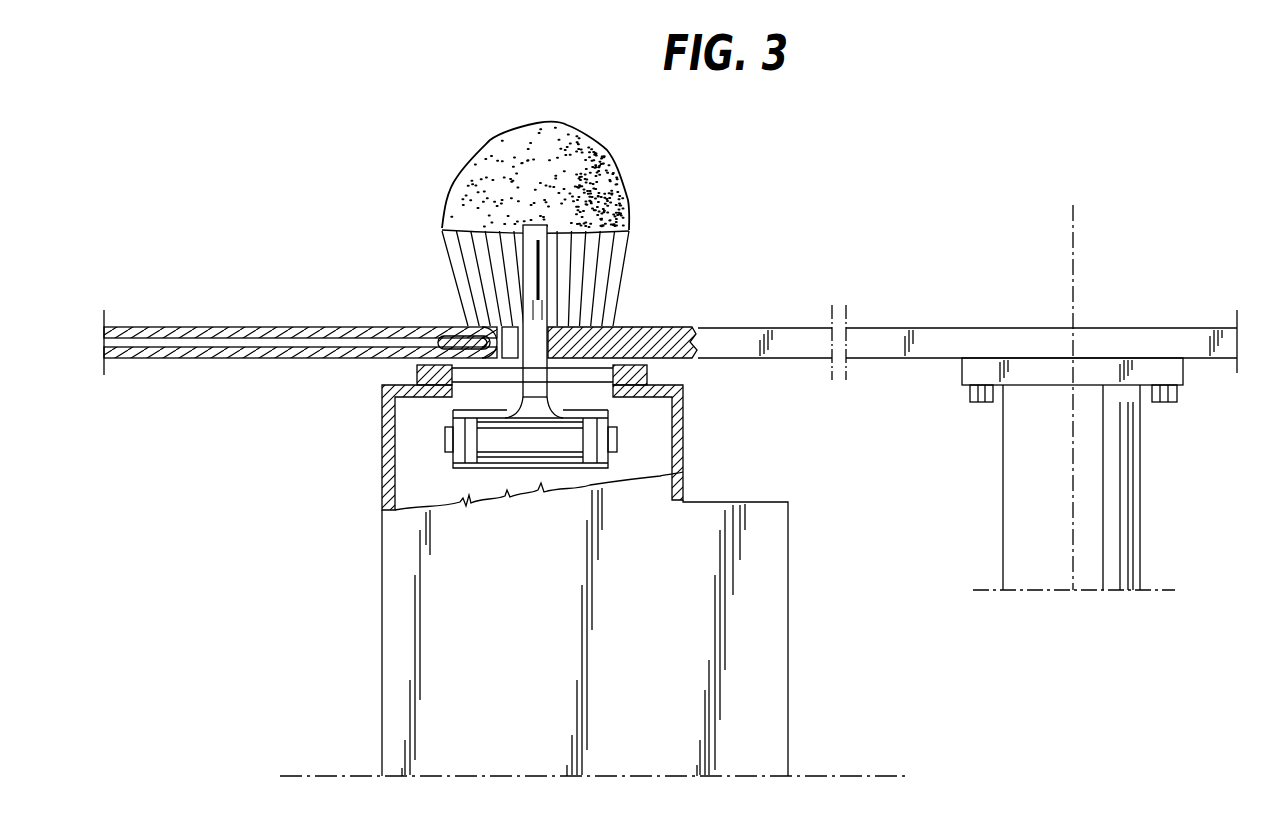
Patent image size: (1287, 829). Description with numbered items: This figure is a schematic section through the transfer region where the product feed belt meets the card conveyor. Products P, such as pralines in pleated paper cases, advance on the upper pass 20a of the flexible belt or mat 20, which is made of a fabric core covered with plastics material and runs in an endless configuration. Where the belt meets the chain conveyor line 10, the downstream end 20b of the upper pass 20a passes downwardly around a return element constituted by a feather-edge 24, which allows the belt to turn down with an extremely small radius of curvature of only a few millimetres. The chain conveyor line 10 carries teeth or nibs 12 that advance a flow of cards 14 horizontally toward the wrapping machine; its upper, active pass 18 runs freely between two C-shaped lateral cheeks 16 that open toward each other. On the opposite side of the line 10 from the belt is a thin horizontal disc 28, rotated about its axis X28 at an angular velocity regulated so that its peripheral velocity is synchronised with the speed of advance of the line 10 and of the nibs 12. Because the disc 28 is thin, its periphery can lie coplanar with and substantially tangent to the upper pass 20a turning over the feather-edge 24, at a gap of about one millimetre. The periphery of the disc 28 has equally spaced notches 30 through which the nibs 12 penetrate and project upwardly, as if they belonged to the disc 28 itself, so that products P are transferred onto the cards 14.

The products P is at (563, 178).
The chain conveyor line 10 is at (537, 508).
The teeth or nibs 12 is at (548, 262).
The cards 14 is at (613, 327).
The C-shaped lateral cheeks 16 is at (413, 367).
The upper active pass 18 is at (468, 472).
The belt or mat 20 is at (300, 284).
The upper pass of the belt 20a is at (330, 326).
The downstream end of the upper pass 20b is at (458, 315).
The feather-edge 24 is at (450, 333).
The horizontal disc 28 is at (908, 344).
The axis of the disc X28 is at (1073, 326).
The perimetral notches 30 is at (562, 320).